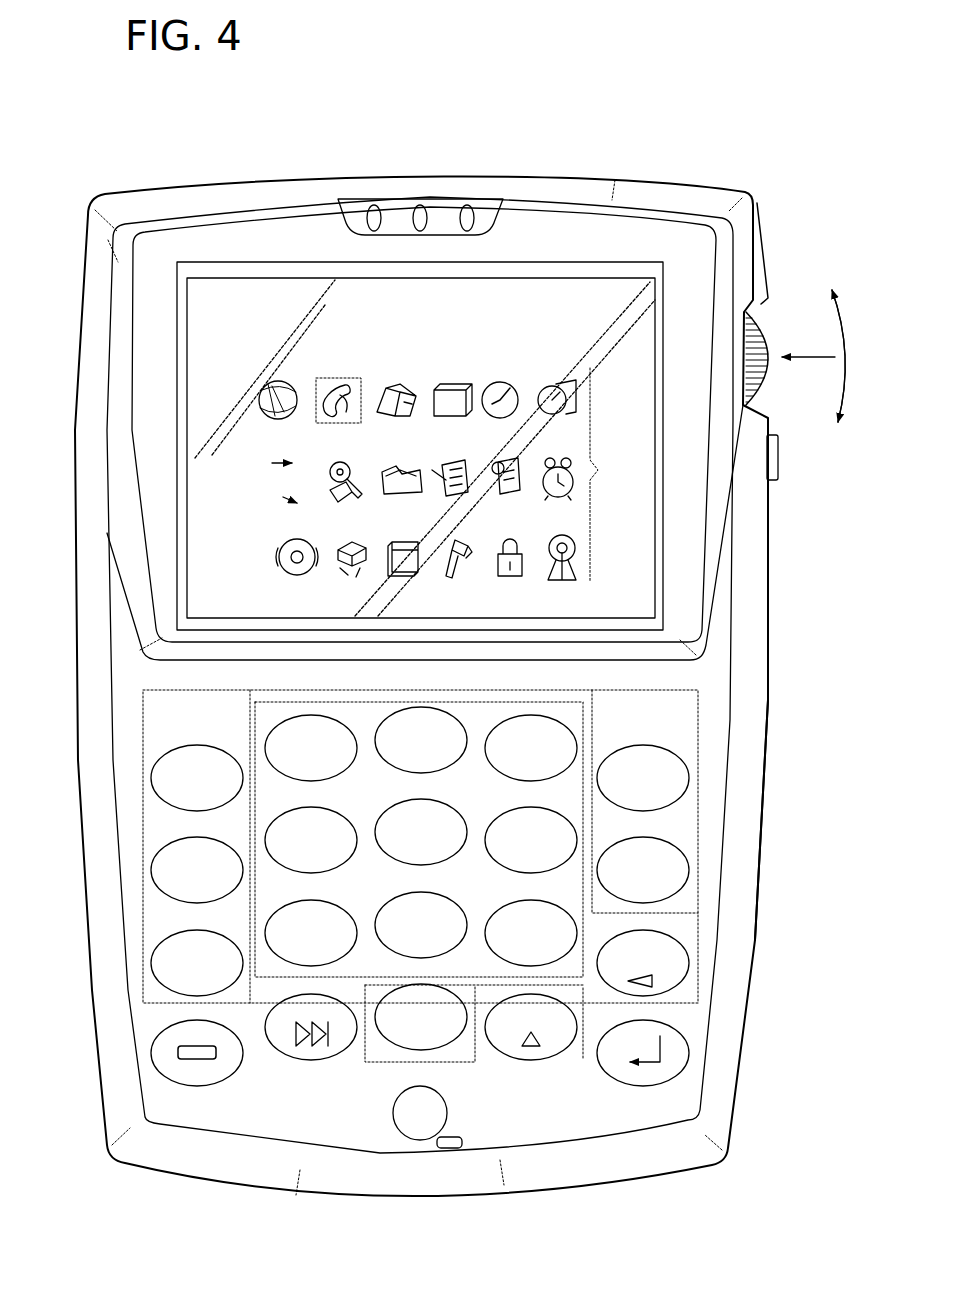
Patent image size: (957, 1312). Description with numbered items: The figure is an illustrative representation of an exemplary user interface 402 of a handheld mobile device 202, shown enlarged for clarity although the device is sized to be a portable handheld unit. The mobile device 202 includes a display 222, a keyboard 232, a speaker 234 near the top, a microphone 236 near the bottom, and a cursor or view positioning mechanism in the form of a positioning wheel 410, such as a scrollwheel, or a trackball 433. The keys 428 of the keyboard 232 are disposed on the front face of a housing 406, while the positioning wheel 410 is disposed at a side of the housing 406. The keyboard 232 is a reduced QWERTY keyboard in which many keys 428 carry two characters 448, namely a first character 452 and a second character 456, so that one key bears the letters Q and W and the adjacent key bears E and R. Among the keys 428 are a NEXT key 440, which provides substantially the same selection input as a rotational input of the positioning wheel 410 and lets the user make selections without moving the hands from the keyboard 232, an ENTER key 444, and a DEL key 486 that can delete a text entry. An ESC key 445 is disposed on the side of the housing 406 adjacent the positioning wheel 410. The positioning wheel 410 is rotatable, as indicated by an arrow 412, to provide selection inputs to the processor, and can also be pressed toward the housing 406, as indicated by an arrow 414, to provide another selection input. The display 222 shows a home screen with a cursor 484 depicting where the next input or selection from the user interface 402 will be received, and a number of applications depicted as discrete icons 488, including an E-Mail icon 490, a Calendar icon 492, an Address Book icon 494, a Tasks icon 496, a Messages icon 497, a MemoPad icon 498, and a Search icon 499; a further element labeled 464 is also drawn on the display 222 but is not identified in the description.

The mobile device 202 is at (233, 166).
The speaker 234 is at (418, 210).
The housing 406 is at (618, 178).
The arrow 412 is at (840, 310).
The arrow 414 is at (814, 357).
The positioning wheel 410 is at (772, 381).
The ESC key 445 is at (780, 462).
The display 222 is at (640, 302).
The user interface 402 is at (773, 693).
The icons 488 is at (600, 470).
The E-Mail icon 490 is at (282, 381).
The cursor 484 is at (338, 376).
The Address Book icon 494 is at (392, 378).
The Calendar icon 492 is at (447, 380).
The clock icon 464 is at (502, 372).
The Messages icon 497 is at (290, 463).
The Search icon 499 is at (348, 463).
The Tasks icon 496 is at (440, 462).
The MemoPad icon 498 is at (512, 460).
The keys 428 is at (175, 752).
The first character 452 is at (628, 765).
The second character 456 is at (660, 766).
The characters 448 is at (196, 882).
The keyboard 232 is at (692, 870).
The NEXT key 440 is at (310, 1062).
The DEL key 486 is at (690, 965).
The ENTER key 444 is at (690, 1040).
The trackball 433 is at (447, 1098).
The microphone 236 is at (450, 1150).